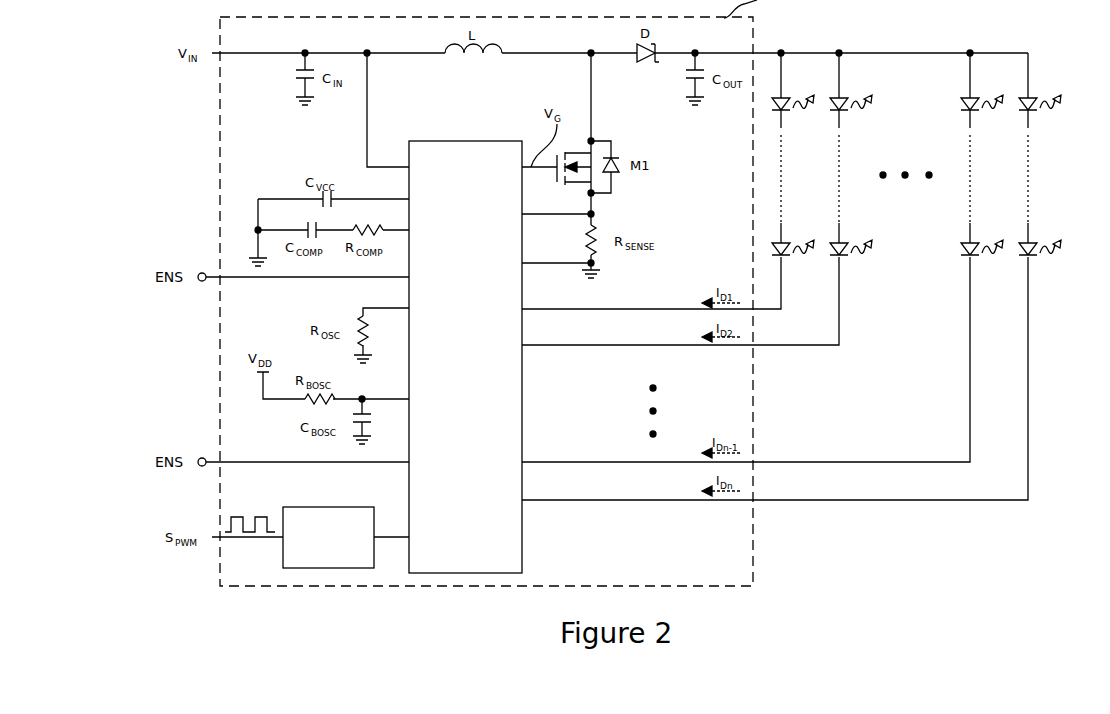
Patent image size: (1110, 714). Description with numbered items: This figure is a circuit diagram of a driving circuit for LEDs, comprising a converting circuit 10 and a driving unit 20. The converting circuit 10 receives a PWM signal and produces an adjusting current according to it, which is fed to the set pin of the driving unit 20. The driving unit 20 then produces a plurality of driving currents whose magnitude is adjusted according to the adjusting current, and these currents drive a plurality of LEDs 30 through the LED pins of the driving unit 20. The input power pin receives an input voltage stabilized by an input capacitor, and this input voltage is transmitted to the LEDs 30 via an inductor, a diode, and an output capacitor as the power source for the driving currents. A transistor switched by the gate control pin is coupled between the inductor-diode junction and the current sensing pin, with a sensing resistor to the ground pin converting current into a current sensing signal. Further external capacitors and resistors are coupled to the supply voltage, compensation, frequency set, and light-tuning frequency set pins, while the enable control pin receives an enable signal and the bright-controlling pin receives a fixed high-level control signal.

The converting circuit 10 is at (345, 507).
The driving unit 20 is at (468, 141).
The LEDs 30 is at (1036, 96).